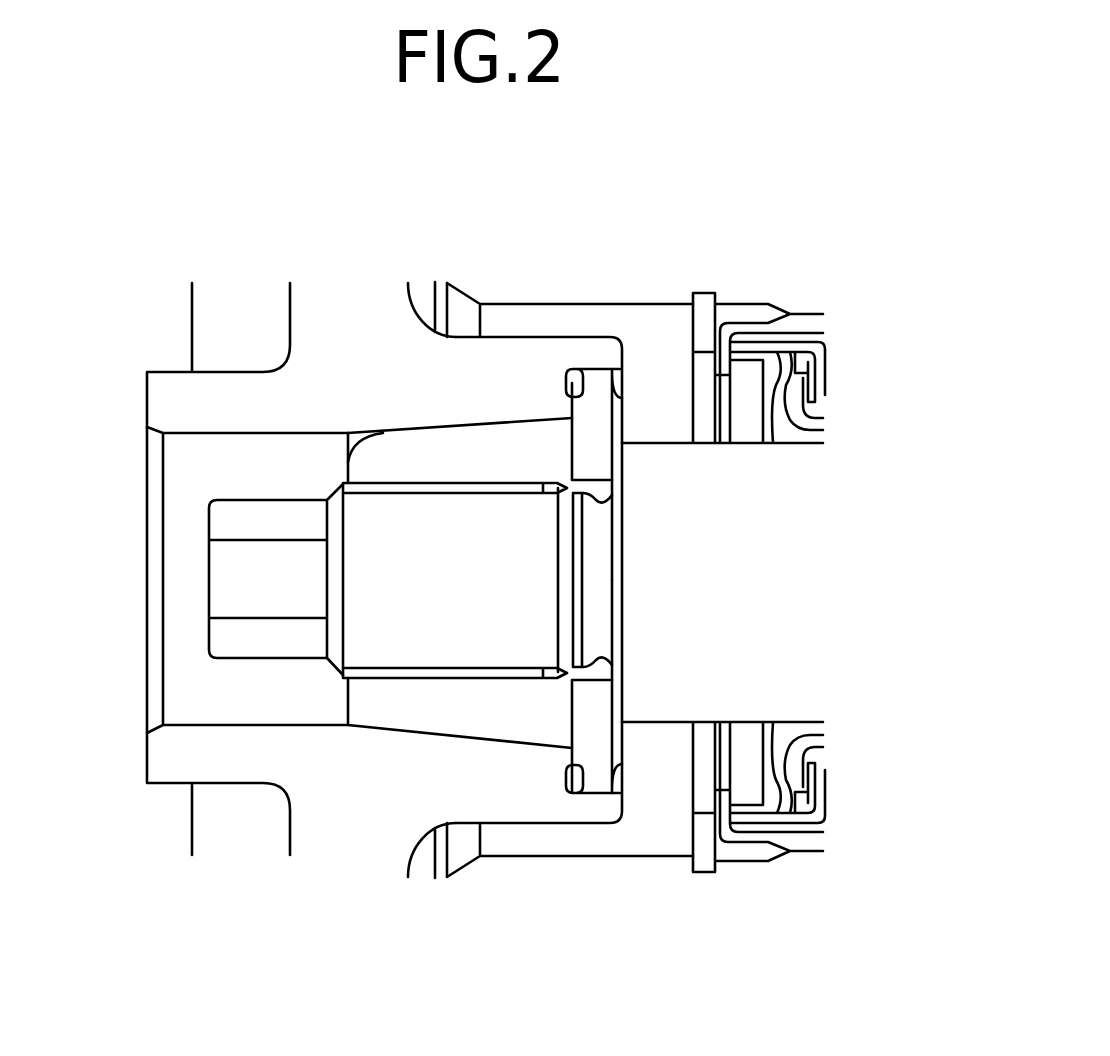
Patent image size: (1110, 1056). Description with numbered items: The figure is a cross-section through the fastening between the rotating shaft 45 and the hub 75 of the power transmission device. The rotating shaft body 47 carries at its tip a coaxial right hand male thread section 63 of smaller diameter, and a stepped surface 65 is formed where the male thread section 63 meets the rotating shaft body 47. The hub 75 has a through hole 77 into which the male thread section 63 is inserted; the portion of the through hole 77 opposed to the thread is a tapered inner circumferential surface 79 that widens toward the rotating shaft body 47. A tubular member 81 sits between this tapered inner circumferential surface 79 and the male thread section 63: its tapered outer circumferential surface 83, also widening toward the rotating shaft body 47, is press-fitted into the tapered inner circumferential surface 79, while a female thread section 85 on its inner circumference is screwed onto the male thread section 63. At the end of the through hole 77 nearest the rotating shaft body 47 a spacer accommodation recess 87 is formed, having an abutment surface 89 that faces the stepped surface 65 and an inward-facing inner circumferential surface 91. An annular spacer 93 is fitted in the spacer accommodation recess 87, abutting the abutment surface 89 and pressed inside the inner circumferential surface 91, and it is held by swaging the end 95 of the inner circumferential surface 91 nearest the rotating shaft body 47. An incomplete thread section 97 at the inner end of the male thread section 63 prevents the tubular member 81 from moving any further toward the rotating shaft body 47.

The rotating shaft 45 is at (218, 575).
The rotating shaft body 47 is at (740, 727).
The right hand male thread section 63 is at (407, 677).
The stepped surface 65 is at (577, 695).
The hub 75 is at (290, 305).
The through hole 77 is at (223, 722).
The tapered inner circumferential surface 79 is at (348, 461).
The tubular member 81 is at (408, 450).
The tapered outer circumferential surface 83 is at (500, 417).
The female thread section 85 is at (457, 493).
The spacer accommodation recess 87 is at (587, 773).
The abutment surface 89 is at (583, 368).
The inner circumferential surface 91 is at (625, 400).
The annular spacer 93 is at (577, 718).
The end of the inner circumferential surface 95 is at (625, 398).
The incomplete thread section 97 is at (568, 557).